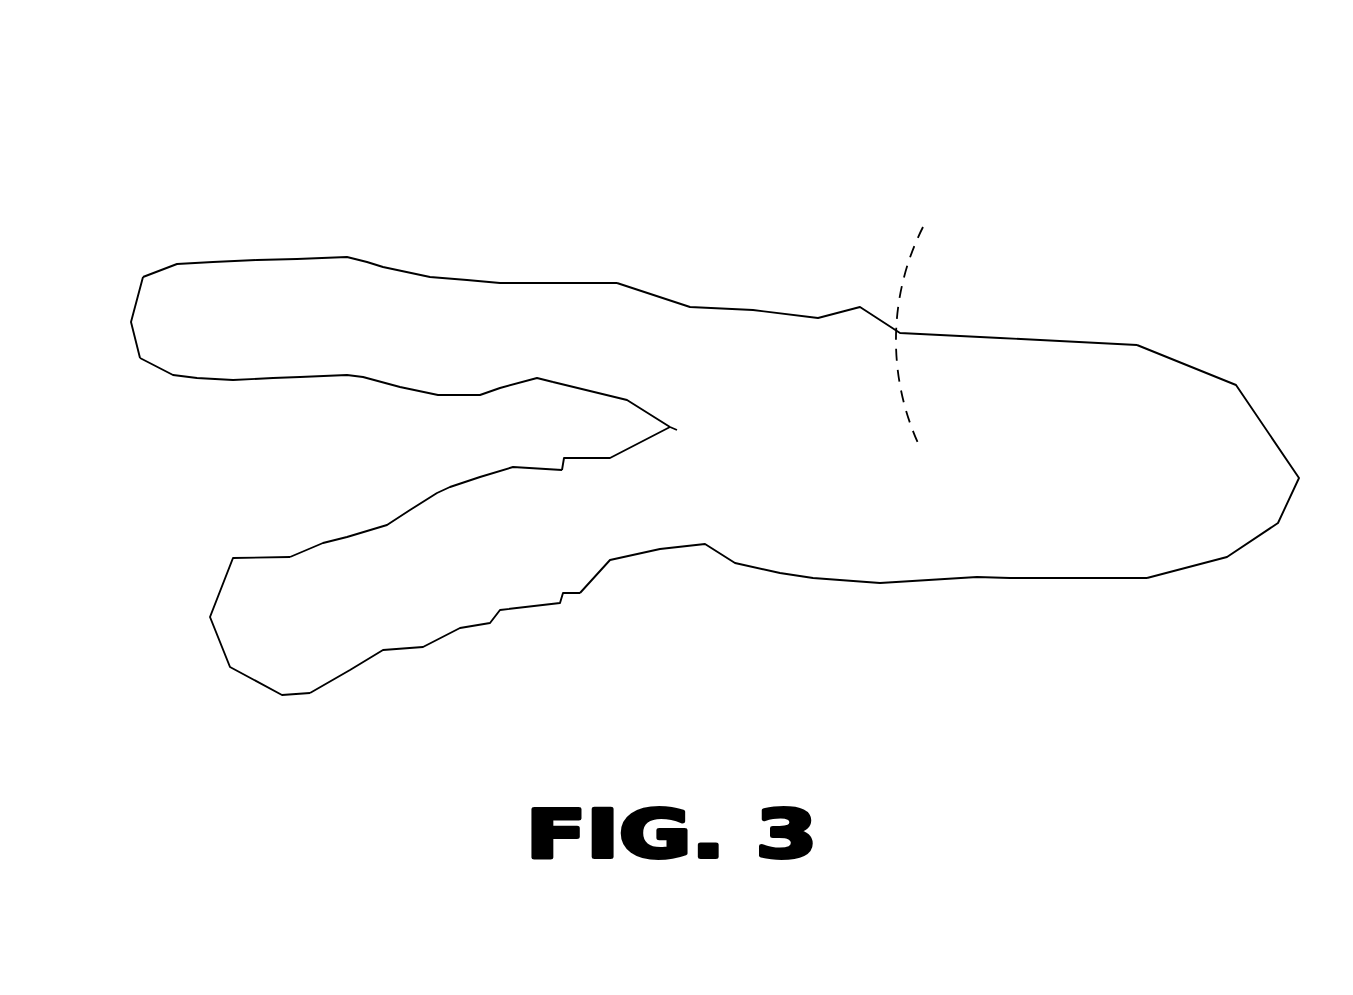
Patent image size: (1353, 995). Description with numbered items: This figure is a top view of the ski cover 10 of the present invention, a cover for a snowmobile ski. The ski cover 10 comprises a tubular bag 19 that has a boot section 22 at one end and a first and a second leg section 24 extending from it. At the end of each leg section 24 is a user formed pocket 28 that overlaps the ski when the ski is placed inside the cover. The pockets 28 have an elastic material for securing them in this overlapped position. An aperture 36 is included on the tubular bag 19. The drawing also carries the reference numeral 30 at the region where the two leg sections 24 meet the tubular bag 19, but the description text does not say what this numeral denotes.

The ski cover 10 is at (1105, 158).
The tubular bag 19 is at (827, 553).
The boot section 22 is at (1163, 437).
The leg section 24 is at (607, 533).
The user formed pocket 28 is at (141, 313).
The junction between leg portions 30 is at (677, 430).
The aperture 36 is at (934, 309).